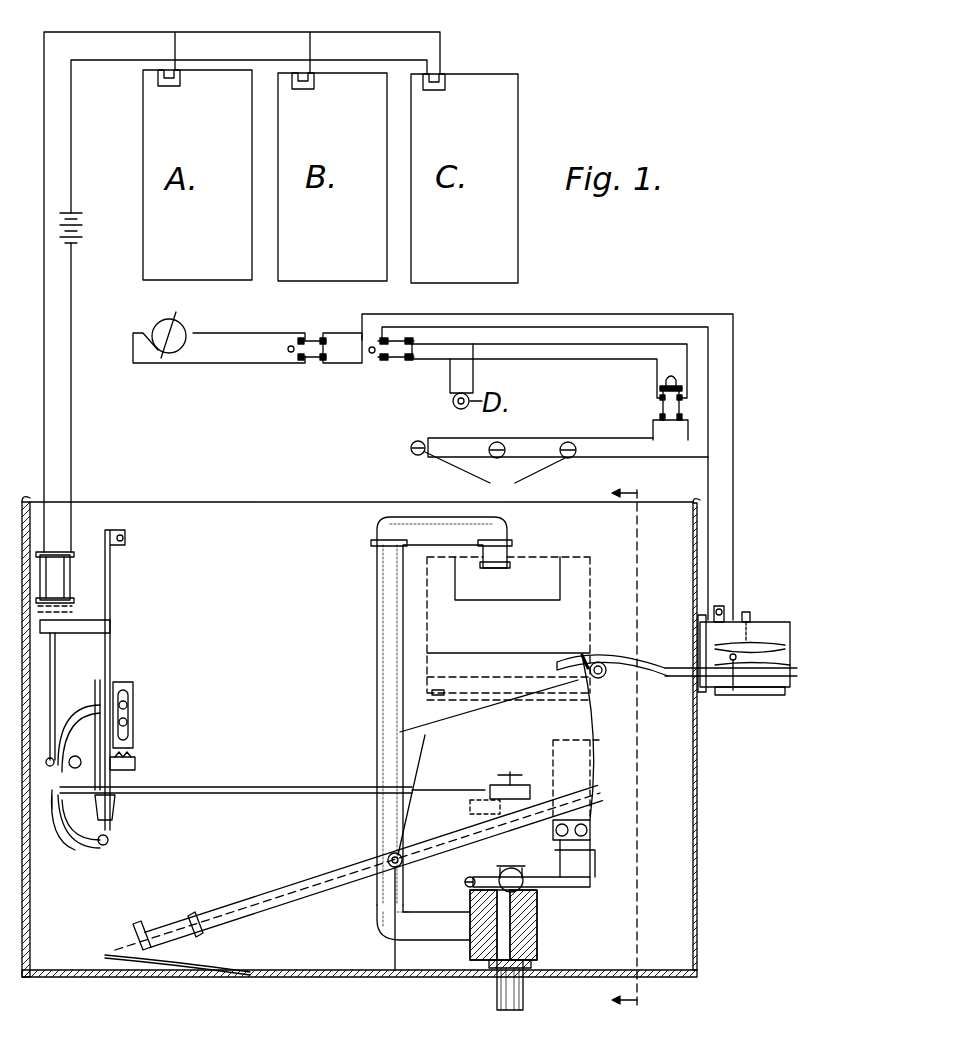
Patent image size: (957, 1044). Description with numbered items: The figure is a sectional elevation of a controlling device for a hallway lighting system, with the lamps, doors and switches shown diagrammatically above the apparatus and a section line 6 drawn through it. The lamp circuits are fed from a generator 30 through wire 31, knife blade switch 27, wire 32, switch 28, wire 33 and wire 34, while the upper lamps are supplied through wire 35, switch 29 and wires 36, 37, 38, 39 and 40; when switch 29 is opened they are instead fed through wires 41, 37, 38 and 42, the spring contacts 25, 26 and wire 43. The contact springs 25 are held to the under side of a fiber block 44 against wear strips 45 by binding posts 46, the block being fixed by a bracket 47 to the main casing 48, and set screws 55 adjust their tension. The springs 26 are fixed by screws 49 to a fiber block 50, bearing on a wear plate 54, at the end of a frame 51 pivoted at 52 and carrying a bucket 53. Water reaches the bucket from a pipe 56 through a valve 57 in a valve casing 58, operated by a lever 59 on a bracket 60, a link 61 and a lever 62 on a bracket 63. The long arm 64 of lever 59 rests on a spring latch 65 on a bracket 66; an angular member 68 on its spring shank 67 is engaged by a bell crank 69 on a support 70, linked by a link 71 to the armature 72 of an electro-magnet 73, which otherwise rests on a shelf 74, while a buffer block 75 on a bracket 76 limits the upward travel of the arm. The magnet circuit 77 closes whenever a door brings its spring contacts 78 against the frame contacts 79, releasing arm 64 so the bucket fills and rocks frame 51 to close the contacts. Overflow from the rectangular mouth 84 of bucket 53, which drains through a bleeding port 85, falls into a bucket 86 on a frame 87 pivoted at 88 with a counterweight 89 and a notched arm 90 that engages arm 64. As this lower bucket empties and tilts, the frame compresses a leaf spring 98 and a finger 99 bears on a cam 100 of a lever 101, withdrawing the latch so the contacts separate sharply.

The section line 6— 6 is at (624, 746).
The spring contacts 25 is at (778, 650).
The spring contacts 26 is at (766, 685).
The knife blade switch 27 is at (314, 360).
The knife blade switch 28 is at (398, 340).
The knife blade switch 29 is at (663, 404).
The generator 30 is at (168, 336).
The wire 31 is at (250, 333).
The wire 32 is at (342, 333).
The wire 33 is at (254, 363).
The wire 34 is at (452, 370).
The wire 35 is at (566, 327).
The wire 36 is at (688, 431).
The wire 37 is at (559, 461).
The wire 38 is at (604, 457).
The wire 39 is at (653, 429).
The wire 40 is at (580, 359).
The wire 41 is at (525, 314).
The wire 42 is at (708, 519).
The wire 43 is at (733, 488).
The fiber block 44 is at (790, 637).
The wear strips 45 is at (748, 643).
The binding posts 46 is at (718, 606).
The bracket 47 is at (698, 622).
The main casing 48 is at (238, 525).
The screws 49 is at (732, 676).
The fiber block 50 is at (762, 695).
The frame 51 is at (672, 668).
The pivot 52 is at (604, 676).
The bucket 53 is at (453, 614).
The connecting and wear plate 54 is at (790, 662).
The set screws 55 is at (746, 612).
The pipe 56 is at (385, 590).
The valve 57 is at (524, 935).
The valve casing 58 is at (537, 916).
The lever 59 is at (514, 790).
The bracket 60 is at (590, 826).
The link 61 is at (588, 870).
The lever 62 is at (570, 887).
The bracket 63 is at (465, 884).
The long arm 64 is at (252, 787).
The spring latch 65 is at (112, 805).
The bracket 66 is at (111, 614).
The spring shank 67 is at (97, 690).
The angular member 68 is at (60, 808).
The bell crank 69 is at (58, 750).
The support 70 is at (85, 842).
The link 71 is at (55, 672).
The armature 72 is at (67, 609).
The electro-magnet 73 is at (55, 575).
The shelf 74 is at (92, 633).
The buffer block 75 is at (135, 764).
The bracket 76 is at (133, 698).
The circuit 77 is at (72, 432).
The spring contacts 78 is at (166, 86).
The contacts 79 is at (166, 70).
The mouth 84 is at (535, 600).
The bleeding port 85 is at (436, 695).
The bucket 86 is at (424, 748).
The frame 87 is at (312, 887).
The pivot 88 is at (390, 856).
The counterweight 89 is at (198, 920).
The notched arm 90 is at (140, 922).
The leaf spring 98 is at (186, 962).
The finger 99 is at (592, 658).
The cam 100 is at (642, 652).
The lever 101 is at (750, 690).